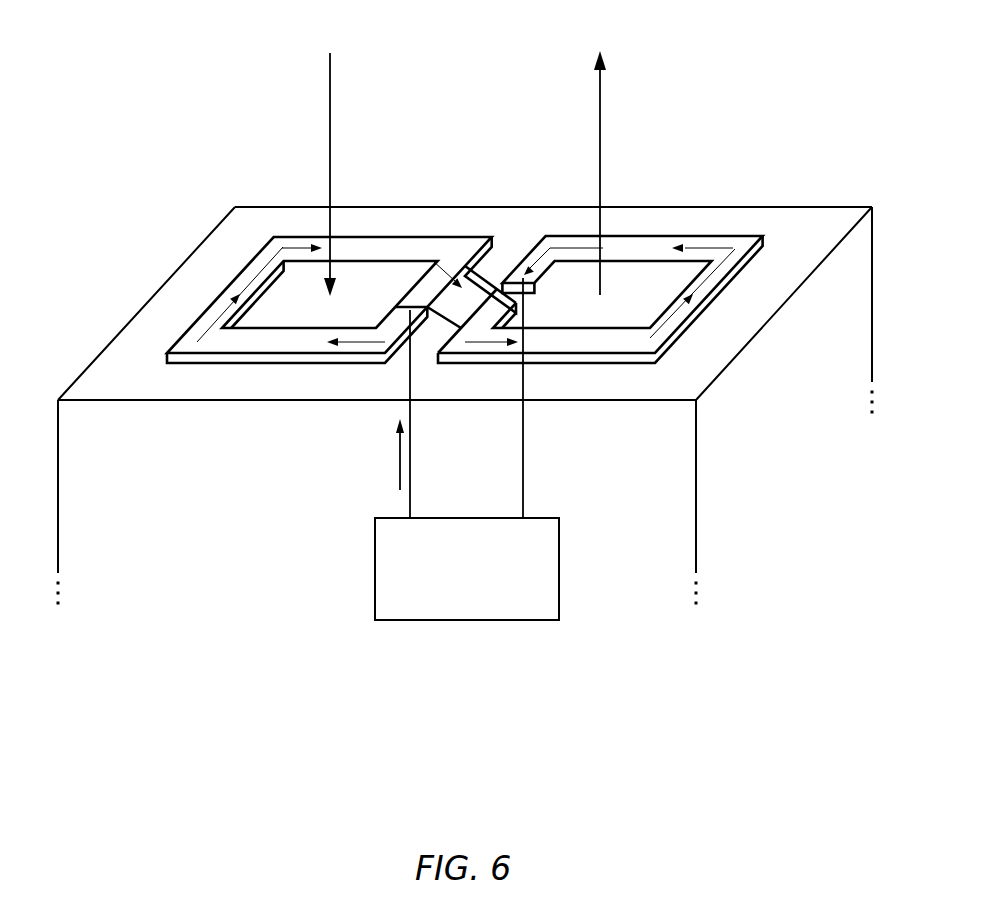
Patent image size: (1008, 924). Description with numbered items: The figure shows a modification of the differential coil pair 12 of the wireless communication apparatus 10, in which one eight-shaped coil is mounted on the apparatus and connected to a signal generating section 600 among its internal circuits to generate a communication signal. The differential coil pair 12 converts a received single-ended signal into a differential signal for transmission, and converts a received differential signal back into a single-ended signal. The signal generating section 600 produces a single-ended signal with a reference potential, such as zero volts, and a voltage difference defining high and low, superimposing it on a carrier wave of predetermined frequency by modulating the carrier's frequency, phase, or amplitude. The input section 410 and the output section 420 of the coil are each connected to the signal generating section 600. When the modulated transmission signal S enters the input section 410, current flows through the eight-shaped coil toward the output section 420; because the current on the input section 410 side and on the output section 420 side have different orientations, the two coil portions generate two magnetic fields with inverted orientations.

The wireless communication apparatus 10 is at (465, 392).
The differential coil pair 12 is at (355, 250).
The input section 410 is at (404, 310).
The output section 420 is at (524, 278).
The signal generating section 600 is at (468, 621).